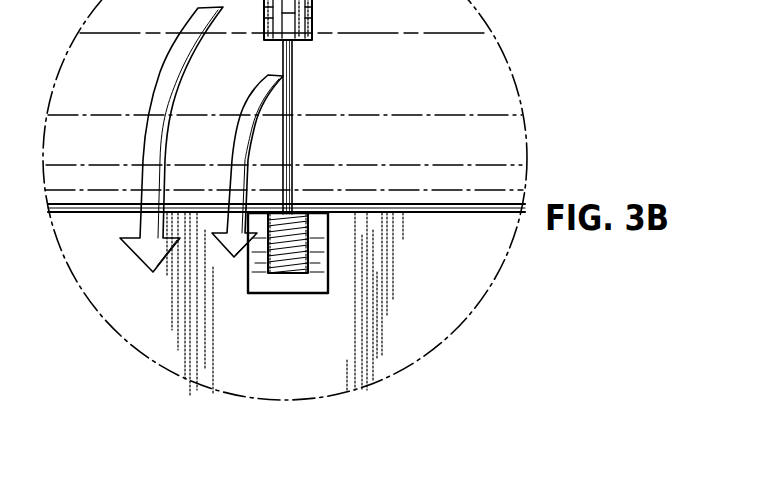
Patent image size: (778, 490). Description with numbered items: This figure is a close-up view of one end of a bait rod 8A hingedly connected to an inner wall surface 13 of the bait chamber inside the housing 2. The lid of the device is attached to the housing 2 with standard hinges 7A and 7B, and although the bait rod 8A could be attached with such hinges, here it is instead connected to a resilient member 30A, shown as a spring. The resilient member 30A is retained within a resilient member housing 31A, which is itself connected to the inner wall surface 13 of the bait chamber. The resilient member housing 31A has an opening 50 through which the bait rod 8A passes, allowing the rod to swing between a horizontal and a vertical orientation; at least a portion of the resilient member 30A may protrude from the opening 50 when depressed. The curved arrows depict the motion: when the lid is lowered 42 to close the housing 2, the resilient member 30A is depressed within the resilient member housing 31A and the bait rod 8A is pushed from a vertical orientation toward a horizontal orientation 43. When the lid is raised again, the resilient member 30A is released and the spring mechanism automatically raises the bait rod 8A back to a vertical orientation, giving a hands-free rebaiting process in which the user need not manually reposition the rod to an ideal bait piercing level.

The housing 2 is at (470, 235).
The hinge 7A is at (120, 205).
The hinge 7B is at (462, 205).
The bait rod 8A is at (292, 93).
The inner wall surface 13 is at (443, 280).
The resilient member 30A is at (290, 273).
The resilient member housing 31A is at (273, 282).
The lowering of lid 42 is at (165, 83).
The horizontal orientation 43 is at (248, 118).
The opening 50 is at (298, 256).